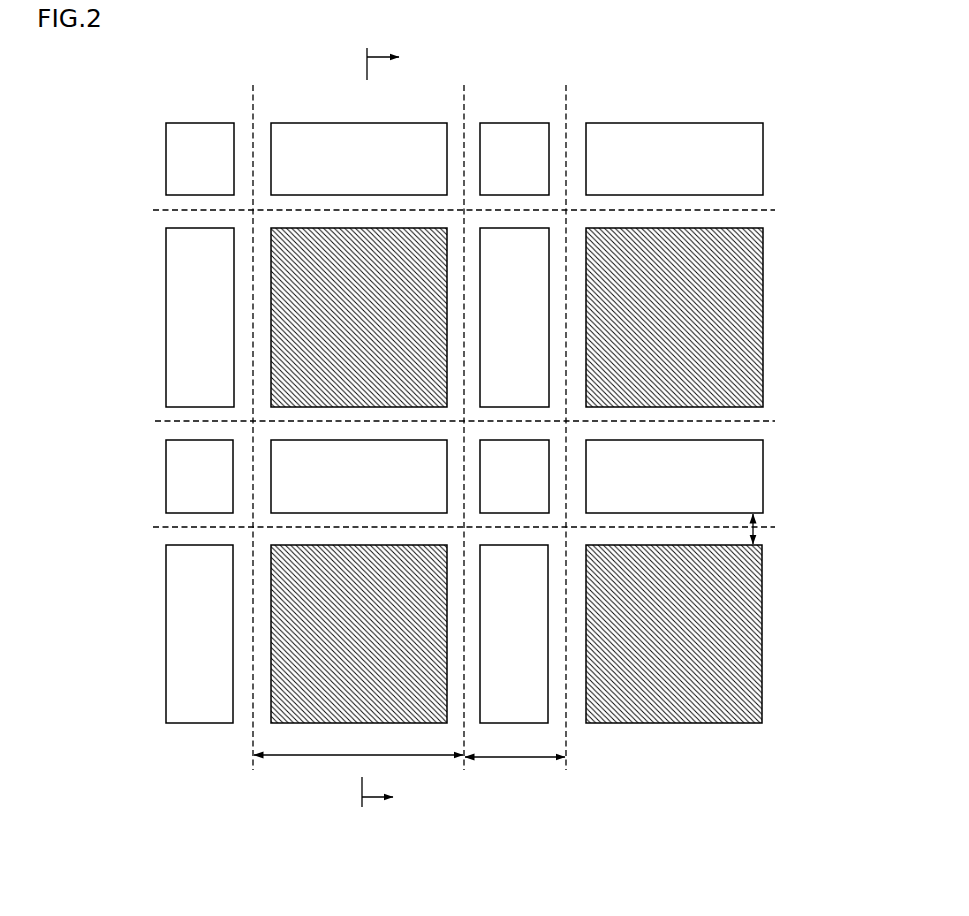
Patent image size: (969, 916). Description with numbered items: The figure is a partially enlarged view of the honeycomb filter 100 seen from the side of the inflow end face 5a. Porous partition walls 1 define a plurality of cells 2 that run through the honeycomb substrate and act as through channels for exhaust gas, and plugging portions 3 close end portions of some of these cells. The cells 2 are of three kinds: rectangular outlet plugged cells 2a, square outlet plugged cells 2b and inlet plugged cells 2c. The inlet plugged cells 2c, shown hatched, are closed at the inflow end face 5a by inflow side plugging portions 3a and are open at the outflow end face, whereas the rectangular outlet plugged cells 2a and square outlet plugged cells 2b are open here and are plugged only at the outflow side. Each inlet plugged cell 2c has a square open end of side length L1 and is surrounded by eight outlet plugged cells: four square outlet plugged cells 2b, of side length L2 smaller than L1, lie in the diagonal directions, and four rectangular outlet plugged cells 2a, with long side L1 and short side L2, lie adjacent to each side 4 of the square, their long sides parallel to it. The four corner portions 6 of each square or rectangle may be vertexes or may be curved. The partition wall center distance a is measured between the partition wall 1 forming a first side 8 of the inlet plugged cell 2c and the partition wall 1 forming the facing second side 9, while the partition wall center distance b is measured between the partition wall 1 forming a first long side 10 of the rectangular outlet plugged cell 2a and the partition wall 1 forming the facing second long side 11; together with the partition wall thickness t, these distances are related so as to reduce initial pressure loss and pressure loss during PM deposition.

The honeycomb filter 100 is at (849, 62).
The partition wall 1 is at (176, 430).
The cell 2 is at (421, 387).
The rectangular outlet plugged cell 2a is at (166, 265).
The square outlet plugged cell 2b is at (166, 158).
The inlet plugged cell 2c is at (271, 329).
The plugging portion 3 is at (530, 654).
The inflow side plugging portion 3a is at (737, 705).
The side 4 is at (768, 248).
The inflow end face 5a is at (212, 110).
The corner portion 6 is at (272, 202).
The first side of the inlet plugged cell 8 is at (448, 380).
The second side of the inlet plugged cell 9 is at (269, 406).
The first long side of the rectangular outlet plugged cell 10 is at (550, 645).
The second long side of the rectangular outlet plugged cell 11 is at (480, 686).